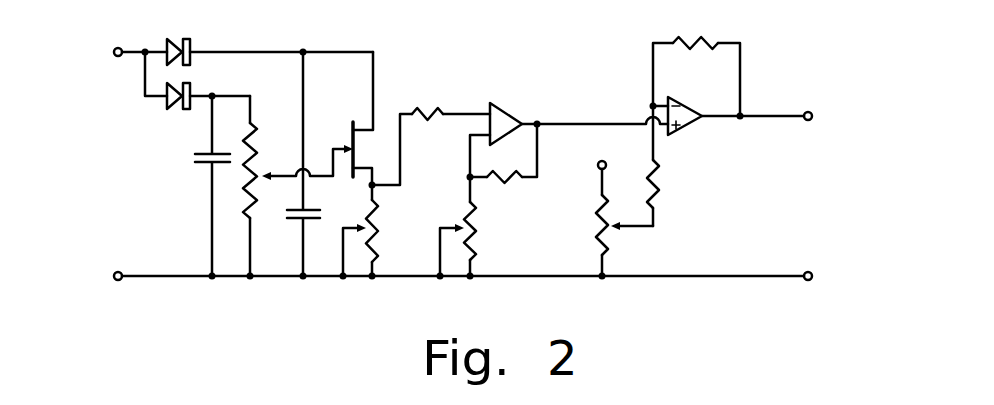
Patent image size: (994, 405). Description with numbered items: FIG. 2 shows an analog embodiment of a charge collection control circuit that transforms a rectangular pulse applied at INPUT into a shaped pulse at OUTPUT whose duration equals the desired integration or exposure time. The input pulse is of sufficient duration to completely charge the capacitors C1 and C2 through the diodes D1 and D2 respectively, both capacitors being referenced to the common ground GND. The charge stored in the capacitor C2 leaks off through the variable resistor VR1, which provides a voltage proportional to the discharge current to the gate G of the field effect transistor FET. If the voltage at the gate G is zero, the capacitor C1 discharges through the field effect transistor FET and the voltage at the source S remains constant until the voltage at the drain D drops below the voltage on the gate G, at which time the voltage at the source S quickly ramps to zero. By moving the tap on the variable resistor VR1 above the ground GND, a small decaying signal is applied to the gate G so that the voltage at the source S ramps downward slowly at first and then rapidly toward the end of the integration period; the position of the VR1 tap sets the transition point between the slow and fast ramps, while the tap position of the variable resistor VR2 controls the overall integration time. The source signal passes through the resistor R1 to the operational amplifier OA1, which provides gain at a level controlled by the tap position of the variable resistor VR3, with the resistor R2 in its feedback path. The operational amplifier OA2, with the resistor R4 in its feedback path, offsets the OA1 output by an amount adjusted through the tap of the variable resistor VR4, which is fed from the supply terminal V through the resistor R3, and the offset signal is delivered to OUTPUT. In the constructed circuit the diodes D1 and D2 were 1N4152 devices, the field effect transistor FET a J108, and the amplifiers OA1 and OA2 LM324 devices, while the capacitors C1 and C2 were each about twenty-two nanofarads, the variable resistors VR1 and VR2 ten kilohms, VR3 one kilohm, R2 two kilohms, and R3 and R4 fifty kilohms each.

The input INPUT is at (104, 53).
The output OUTPUT is at (806, 116).
The ground GND is at (465, 275).
The diode D1 is at (270, 37).
The diode D2 is at (208, 113).
The capacitor C1 is at (295, 164).
The capacitor C2 is at (204, 186).
The variable resistor VR1 is at (264, 133).
The variable resistor VR2 is at (385, 230).
The variable resistor VR3 is at (483, 226).
The variable resistor VR4 is at (600, 235).
The field effect transistor FET is at (351, 118).
The gate G is at (321, 149).
The drain D is at (384, 130).
The source S is at (384, 167).
The resistor R1 is at (431, 131).
The resistor R2 is at (503, 153).
The resistor R3 is at (670, 166).
The resistor R4 is at (696, 64).
The operational amplifier OA1 is at (579, 113).
The operational amplifier OA2 is at (685, 103).
The voltage supply V is at (601, 166).